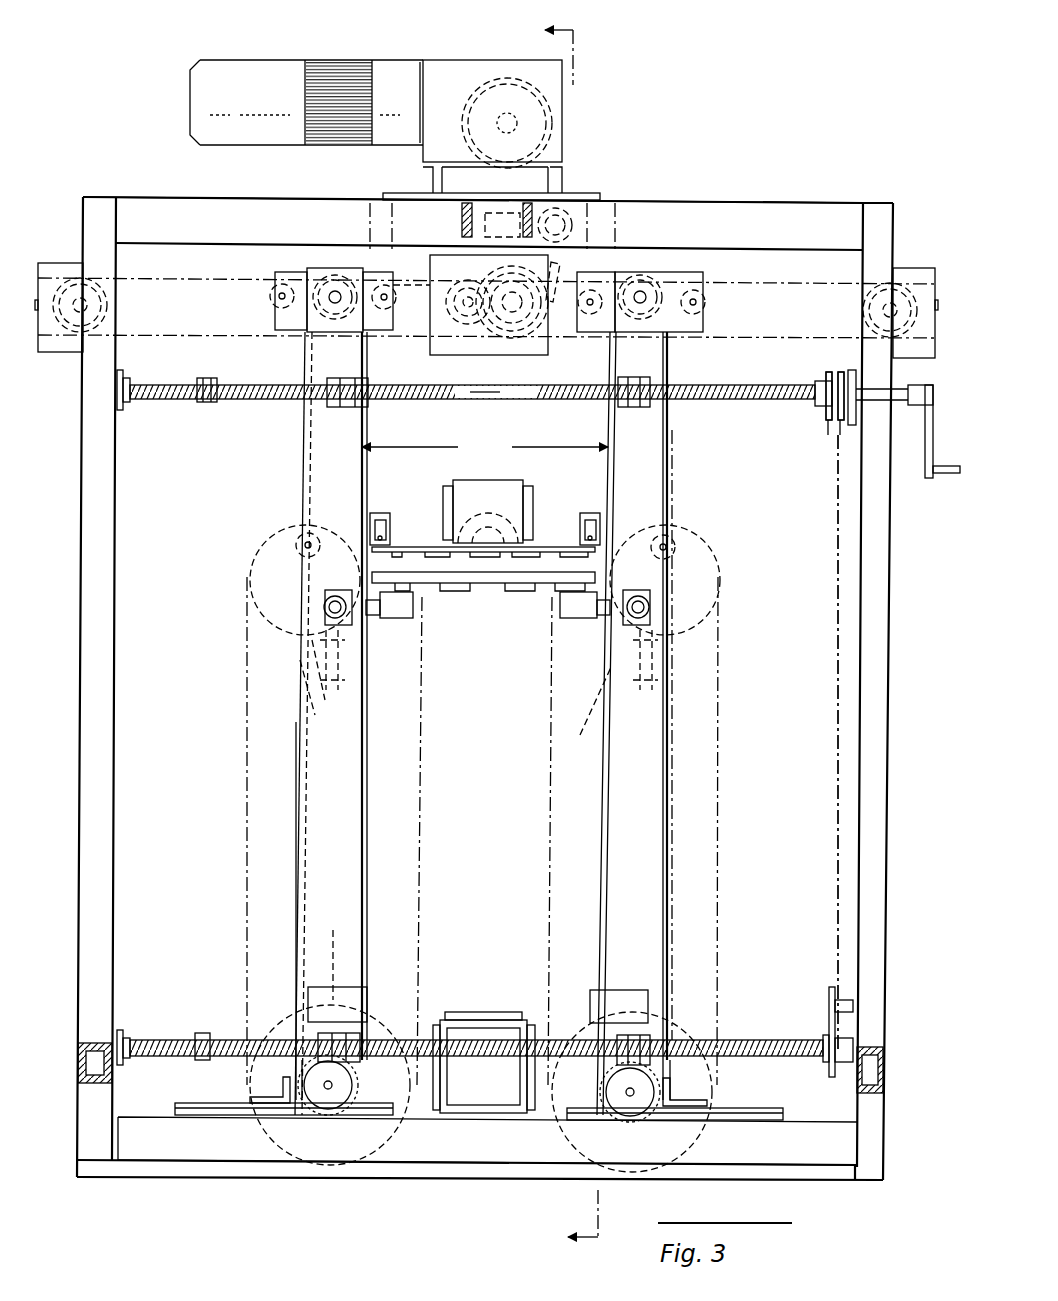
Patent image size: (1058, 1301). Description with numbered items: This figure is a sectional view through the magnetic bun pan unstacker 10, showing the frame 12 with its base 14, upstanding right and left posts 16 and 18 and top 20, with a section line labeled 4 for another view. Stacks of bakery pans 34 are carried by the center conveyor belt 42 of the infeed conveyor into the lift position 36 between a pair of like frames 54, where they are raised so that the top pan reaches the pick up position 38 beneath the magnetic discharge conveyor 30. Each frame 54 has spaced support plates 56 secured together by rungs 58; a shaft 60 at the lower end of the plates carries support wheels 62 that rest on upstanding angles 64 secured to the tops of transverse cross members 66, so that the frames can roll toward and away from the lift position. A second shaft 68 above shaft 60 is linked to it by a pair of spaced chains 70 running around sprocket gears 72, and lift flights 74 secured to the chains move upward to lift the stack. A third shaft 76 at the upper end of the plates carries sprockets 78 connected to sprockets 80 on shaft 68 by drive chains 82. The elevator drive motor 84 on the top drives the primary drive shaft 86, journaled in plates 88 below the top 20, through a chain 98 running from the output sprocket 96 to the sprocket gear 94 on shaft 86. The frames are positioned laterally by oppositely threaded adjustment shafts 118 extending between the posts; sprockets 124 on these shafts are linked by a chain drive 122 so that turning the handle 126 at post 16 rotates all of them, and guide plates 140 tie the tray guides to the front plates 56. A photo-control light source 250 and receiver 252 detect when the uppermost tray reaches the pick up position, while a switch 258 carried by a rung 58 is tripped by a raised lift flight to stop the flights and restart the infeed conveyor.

The section line 4- 4 is at (556, 634).
The magnetic bun pan unstacker 10 is at (835, 172).
The frame 12 is at (887, 985).
The base 14 is at (830, 1168).
The right post 16 is at (888, 836).
The left post 18 is at (78, 830).
The top 20 is at (672, 203).
The magnetic discharge conveyor 30 is at (503, 482).
The bakery pan 34 is at (490, 586).
The lift position 36 is at (462, 971).
The pick up position 38 is at (525, 585).
The center conveyor belt 42 is at (478, 1020).
The frame 54 is at (485, 432).
The support plate 56 is at (303, 455).
The rung 58 is at (300, 720).
The shaft 60 is at (328, 1090).
The support wheel 62 is at (353, 1070).
The upstanding angle 64 is at (178, 1105).
The transverse cross member 66 is at (421, 1162).
The second shaft 68 is at (345, 612).
The chain 70 is at (296, 800).
The sprocket gear 72 is at (325, 618).
The lift flight 74 is at (405, 600).
The third shaft 76 is at (340, 297).
The sprocket 78 is at (325, 280).
The sprocket 80 is at (297, 660).
The drive chain 82 is at (300, 480).
The elevator drive motor 84 is at (260, 104).
The primary drive shaft 86 is at (512, 305).
The plate 88 is at (430, 345).
The sprocket gear 94 is at (552, 352).
The output sprocket 96 is at (560, 95).
The chain 98 is at (562, 268).
The adjustment shaft 118 is at (520, 108).
The chain drive 122 is at (838, 656).
The sprocket 124 is at (838, 378).
The handle 126 is at (924, 455).
The guide plate 140 is at (367, 1003).
The photo-control light source 250 is at (300, 575).
The receiver 252 is at (658, 570).
The switch 258 is at (581, 712).